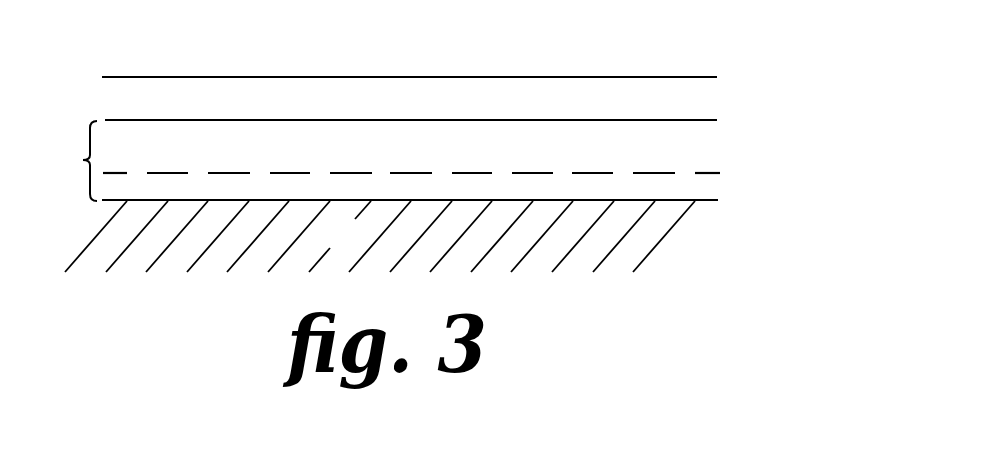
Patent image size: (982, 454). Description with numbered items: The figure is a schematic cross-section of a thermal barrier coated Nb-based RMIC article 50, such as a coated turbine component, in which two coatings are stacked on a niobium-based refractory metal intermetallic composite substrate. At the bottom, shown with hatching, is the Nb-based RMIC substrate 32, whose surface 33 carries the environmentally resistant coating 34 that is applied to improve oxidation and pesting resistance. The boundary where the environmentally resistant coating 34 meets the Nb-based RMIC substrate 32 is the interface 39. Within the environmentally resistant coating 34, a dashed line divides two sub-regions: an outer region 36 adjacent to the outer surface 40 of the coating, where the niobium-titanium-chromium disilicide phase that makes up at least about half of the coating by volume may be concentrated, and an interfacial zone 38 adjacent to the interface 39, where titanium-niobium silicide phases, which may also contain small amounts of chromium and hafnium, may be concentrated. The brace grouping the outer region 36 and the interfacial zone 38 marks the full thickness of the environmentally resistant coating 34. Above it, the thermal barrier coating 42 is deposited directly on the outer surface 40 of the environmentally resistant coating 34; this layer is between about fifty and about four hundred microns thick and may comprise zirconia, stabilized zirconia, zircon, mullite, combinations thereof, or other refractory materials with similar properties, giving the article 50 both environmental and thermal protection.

The thermal barrier coated Nb-based RMIC article 50 is at (337, 52).
The thermal barrier coating 42 is at (409, 70).
The outer surface of the environmentally resistant coating 40 is at (551, 113).
The environmentally resistant coating 34 is at (420, 160).
The outer region 36 is at (411, 138).
The interfacial zone 38 is at (411, 187).
The surface of the Nb-based RMIC substrate 33 is at (672, 190).
The Nb-based RMIC substrate 32 is at (460, 233).
The interface 39 is at (735, 199).